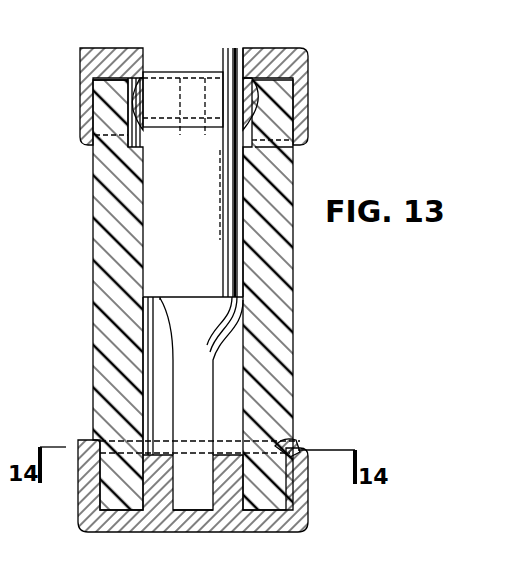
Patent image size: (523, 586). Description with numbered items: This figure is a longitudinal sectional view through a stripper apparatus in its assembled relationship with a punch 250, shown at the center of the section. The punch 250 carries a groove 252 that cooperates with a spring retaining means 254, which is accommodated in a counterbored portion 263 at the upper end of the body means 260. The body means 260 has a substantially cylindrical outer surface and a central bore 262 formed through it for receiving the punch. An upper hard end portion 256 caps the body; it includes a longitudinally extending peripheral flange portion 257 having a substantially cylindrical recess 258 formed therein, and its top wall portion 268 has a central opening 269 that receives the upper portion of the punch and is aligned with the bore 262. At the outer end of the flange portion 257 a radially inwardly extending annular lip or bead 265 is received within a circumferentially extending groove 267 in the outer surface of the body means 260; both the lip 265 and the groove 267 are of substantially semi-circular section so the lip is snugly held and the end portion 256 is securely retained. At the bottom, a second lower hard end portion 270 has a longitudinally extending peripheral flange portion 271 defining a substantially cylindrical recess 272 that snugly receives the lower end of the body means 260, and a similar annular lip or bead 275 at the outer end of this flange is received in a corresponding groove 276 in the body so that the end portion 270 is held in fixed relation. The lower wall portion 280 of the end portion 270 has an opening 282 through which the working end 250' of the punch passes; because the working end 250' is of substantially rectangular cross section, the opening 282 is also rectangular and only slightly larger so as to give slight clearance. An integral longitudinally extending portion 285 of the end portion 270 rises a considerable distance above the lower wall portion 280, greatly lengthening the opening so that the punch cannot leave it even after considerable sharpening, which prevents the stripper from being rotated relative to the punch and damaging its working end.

The punch 250 is at (225, 295).
The working end of the punch 250' is at (228, 533).
The groove 252 is at (170, 95).
The spring retaining means 254 is at (242, 100).
The hard end portion 256 is at (80, 68).
The peripheral flange portion 257 is at (84, 113).
The cylindrical recess 258 is at (98, 98).
The body means 260 is at (94, 220).
The central bore 262 is at (242, 354).
The counterbored portion 263 is at (283, 158).
The annular lip 265 is at (93, 146).
The circumferentially extending groove 267 is at (103, 150).
The top wall portion 268 is at (121, 60).
The central opening 269 is at (236, 50).
The lower hard end portion 270 is at (306, 500).
The peripheral flange portion 271 is at (297, 468).
The cylindrical recess 272 is at (93, 472).
The annular lip 275 is at (294, 440).
The circumferentially extending groove 276 is at (184, 445).
The lower wall portion 280 is at (114, 527).
The opening 282 is at (174, 517).
The longitudinally extending portion 285 is at (228, 455).